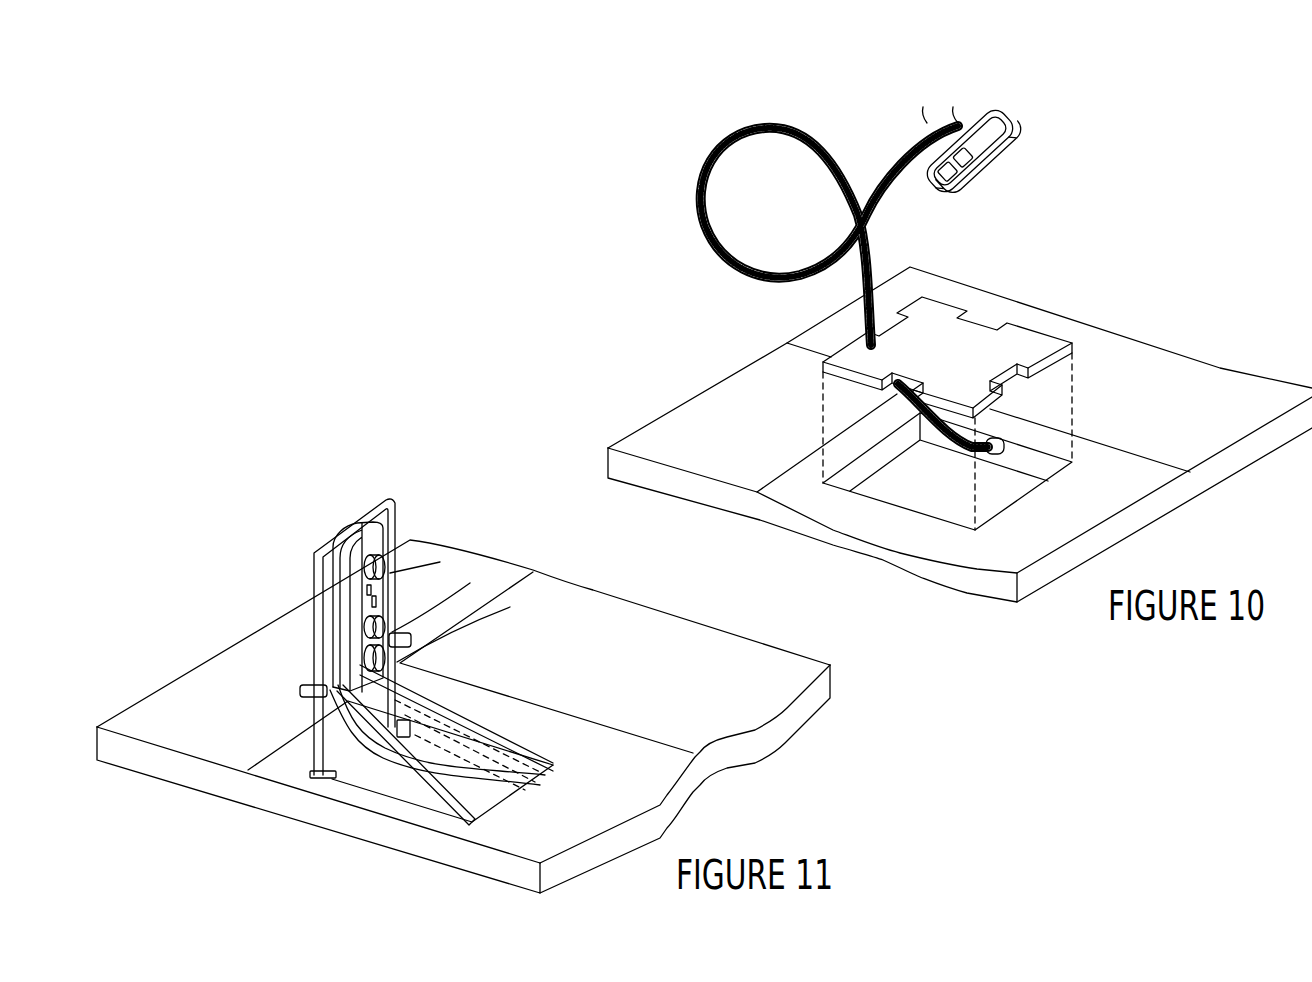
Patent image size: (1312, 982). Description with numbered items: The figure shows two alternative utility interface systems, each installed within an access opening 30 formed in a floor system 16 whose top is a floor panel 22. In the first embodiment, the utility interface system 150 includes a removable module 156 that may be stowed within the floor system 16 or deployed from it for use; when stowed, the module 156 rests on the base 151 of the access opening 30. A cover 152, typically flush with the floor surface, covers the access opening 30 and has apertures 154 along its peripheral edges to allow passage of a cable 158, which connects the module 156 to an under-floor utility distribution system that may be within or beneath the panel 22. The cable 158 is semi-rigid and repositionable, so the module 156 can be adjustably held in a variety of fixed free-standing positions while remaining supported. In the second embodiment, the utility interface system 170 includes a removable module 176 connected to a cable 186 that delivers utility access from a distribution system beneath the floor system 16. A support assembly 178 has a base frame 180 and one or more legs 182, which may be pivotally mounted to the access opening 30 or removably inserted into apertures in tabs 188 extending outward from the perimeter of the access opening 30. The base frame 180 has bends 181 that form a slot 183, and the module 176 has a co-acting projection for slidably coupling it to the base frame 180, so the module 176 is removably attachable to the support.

In FIG. 10, the floor system 16 is at (960, 434).
In FIG. 11, the floor system 16 is at (481, 716).
In FIG. 10, the panel 22 is at (1220, 390).
In FIG. 11, the panel 22 is at (790, 667).
In FIG. 10, the access opening 30 is at (870, 500).
In FIG. 11, the access opening 30 is at (500, 800).
In FIG. 10, the utility interface system 150 is at (904, 248).
In FIG. 10, the base 151 is at (1000, 492).
In FIG. 10, the cover 152 is at (978, 358).
In FIG. 10, the apertures 154 is at (1013, 380).
In FIG. 10, the removable module 156 is at (1015, 133).
In FIG. 10, the cable 158 is at (876, 268).
In FIG. 11, the utility interface system 170 is at (385, 679).
In FIG. 11, the removable module 176 is at (386, 568).
In FIG. 11, the support assembly 178 is at (301, 675).
In FIG. 11, the base frame 180 is at (315, 553).
In FIG. 11, the bends 181 is at (333, 535).
In FIG. 11, the legs 182 is at (483, 735).
In FIG. 11, the slot 183 is at (341, 520).
In FIG. 11, the cable 186 is at (385, 757).
In FIG. 11, the tabs 188 is at (400, 707).